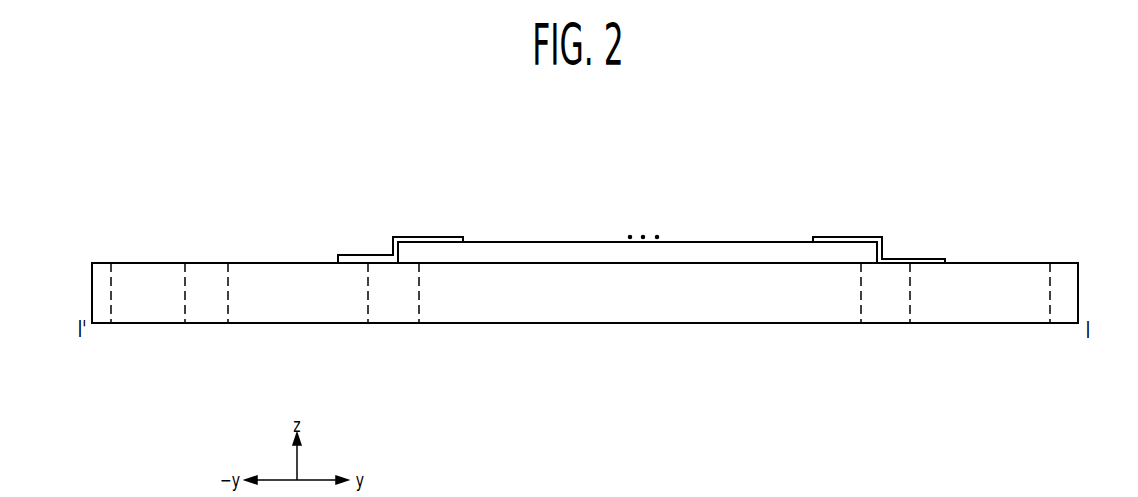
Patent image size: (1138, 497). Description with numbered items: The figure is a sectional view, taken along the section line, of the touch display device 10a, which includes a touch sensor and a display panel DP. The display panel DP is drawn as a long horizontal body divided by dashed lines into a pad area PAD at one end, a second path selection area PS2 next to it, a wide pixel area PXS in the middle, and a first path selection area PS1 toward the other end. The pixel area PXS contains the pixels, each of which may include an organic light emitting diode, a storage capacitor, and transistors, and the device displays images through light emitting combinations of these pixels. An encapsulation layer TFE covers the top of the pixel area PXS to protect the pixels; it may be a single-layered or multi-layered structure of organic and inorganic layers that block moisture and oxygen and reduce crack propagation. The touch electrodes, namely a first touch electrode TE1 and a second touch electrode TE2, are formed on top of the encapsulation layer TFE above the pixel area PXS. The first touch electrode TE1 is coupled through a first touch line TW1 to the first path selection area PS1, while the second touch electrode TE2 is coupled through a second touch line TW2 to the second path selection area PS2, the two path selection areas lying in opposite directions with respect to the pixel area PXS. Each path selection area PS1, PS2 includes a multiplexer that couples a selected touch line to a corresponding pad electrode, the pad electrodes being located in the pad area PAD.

The touch display device 10a is at (643, 130).
The display panel DP is at (1078, 292).
The encapsulation layer TFE is at (781, 242).
The first touch electrode TE1 is at (848, 237).
The second touch electrode TE2 is at (428, 237).
The first touch line TW1 is at (910, 259).
The second touch line TW2 is at (368, 255).
The pad area PAD is at (147, 323).
The first path selection area PS1 is at (953, 323).
The second path selection area PS2 is at (333, 323).
The pixel area PXS is at (657, 323).